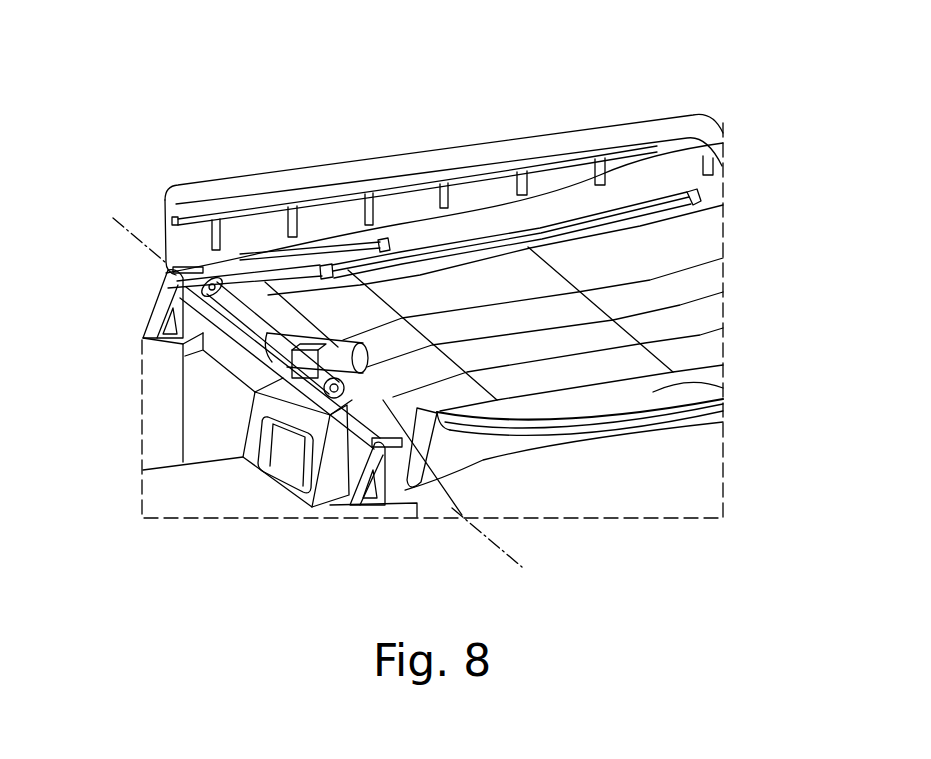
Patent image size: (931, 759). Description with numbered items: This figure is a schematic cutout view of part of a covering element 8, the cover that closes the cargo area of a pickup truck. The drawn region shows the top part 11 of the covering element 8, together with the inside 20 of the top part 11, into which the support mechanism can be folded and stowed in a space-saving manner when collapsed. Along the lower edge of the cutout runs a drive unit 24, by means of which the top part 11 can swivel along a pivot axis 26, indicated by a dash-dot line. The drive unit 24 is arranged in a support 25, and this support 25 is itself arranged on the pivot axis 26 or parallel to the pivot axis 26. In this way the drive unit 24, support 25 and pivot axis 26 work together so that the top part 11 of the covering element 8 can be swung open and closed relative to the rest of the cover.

The covering element 8 is at (406, 120).
The inside (of top part) 20 is at (678, 242).
The top part 11 is at (653, 390).
The drive unit 24 is at (305, 377).
The support 25 is at (437, 413).
The pivot axis 26 is at (493, 545).